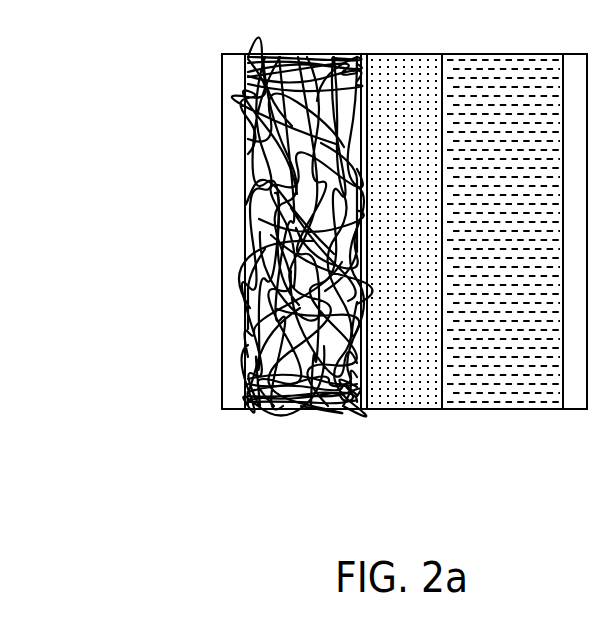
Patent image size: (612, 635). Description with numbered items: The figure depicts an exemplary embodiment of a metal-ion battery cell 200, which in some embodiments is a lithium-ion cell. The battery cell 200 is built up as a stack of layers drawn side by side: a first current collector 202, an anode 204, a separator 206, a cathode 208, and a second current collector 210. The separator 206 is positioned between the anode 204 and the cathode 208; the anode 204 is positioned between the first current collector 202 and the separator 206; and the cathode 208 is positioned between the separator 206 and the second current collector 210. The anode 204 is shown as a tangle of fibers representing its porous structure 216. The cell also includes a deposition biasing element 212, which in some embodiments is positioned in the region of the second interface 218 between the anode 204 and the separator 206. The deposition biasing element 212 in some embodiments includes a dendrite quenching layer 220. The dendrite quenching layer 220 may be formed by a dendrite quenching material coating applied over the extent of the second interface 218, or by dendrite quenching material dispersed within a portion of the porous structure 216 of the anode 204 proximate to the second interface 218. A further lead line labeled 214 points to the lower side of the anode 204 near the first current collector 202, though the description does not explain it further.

The metal-ion battery cell 200 is at (106, 49).
The first current collector 202 is at (222, 101).
The anode 204 is at (266, 58).
The separator 206 is at (405, 53).
The cathode 208 is at (510, 410).
The second current collector 210 is at (577, 410).
The deposition biasing element 212 is at (381, 246).
The bottom surface of fibrous layer 214 is at (248, 425).
The porous structure 216 is at (297, 42).
The second interface 218 is at (360, 425).
The dendrite quenching layer 220 is at (362, 177).